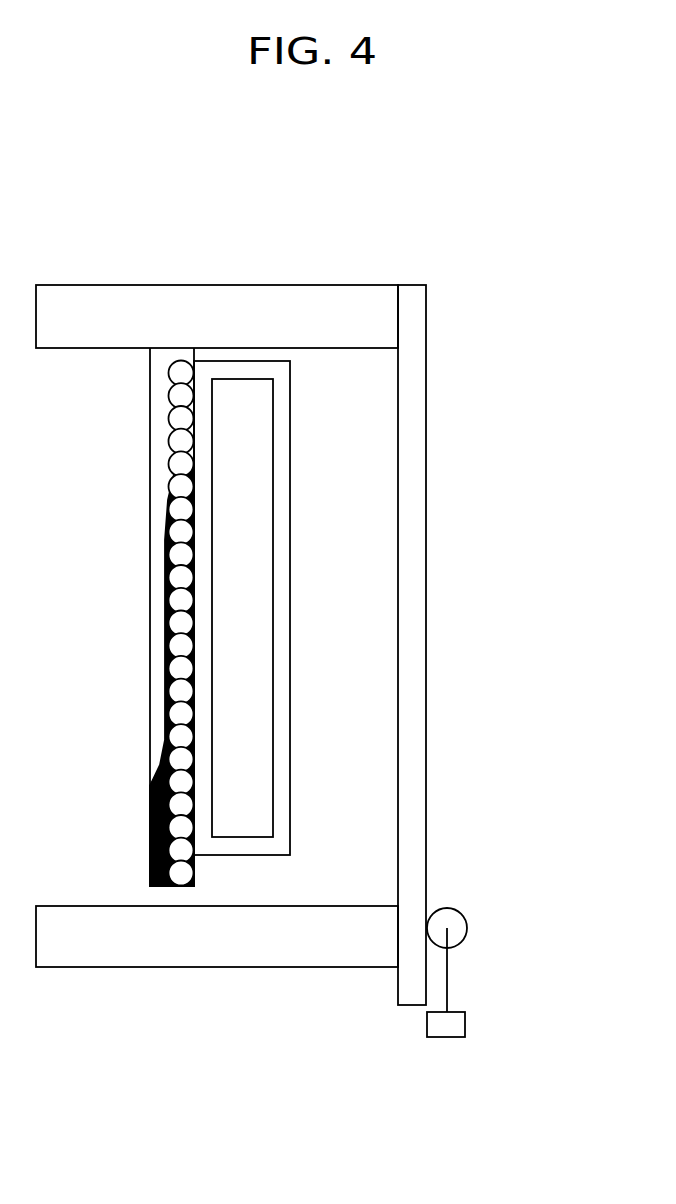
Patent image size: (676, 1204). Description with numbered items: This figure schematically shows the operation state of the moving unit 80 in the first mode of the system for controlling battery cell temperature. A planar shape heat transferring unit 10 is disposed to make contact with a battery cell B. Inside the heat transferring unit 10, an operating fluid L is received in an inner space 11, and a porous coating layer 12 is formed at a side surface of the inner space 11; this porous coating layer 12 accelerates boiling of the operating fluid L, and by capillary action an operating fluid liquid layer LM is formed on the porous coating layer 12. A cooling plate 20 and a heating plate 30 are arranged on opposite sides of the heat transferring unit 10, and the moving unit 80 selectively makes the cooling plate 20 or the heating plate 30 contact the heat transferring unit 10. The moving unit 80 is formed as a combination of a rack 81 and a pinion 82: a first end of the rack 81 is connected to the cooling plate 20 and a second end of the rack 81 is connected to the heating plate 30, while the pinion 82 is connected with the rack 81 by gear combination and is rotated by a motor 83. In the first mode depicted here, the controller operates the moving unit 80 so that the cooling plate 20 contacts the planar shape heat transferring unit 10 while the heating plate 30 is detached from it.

The planar shape heat transferring unit 10 is at (159, 684).
The inner space 11 is at (160, 377).
The porous coating layer 12 is at (175, 462).
The operating fluid liquid layer LM is at (165, 540).
The operating fluid L is at (150, 843).
The battery cell B is at (205, 598).
The cooling plate 20 is at (336, 300).
The heating plate 30 is at (336, 957).
The moving unit 80 is at (491, 661).
The rack 81 is at (426, 873).
The pinion 82 is at (467, 924).
The motor 83 is at (476, 1024).